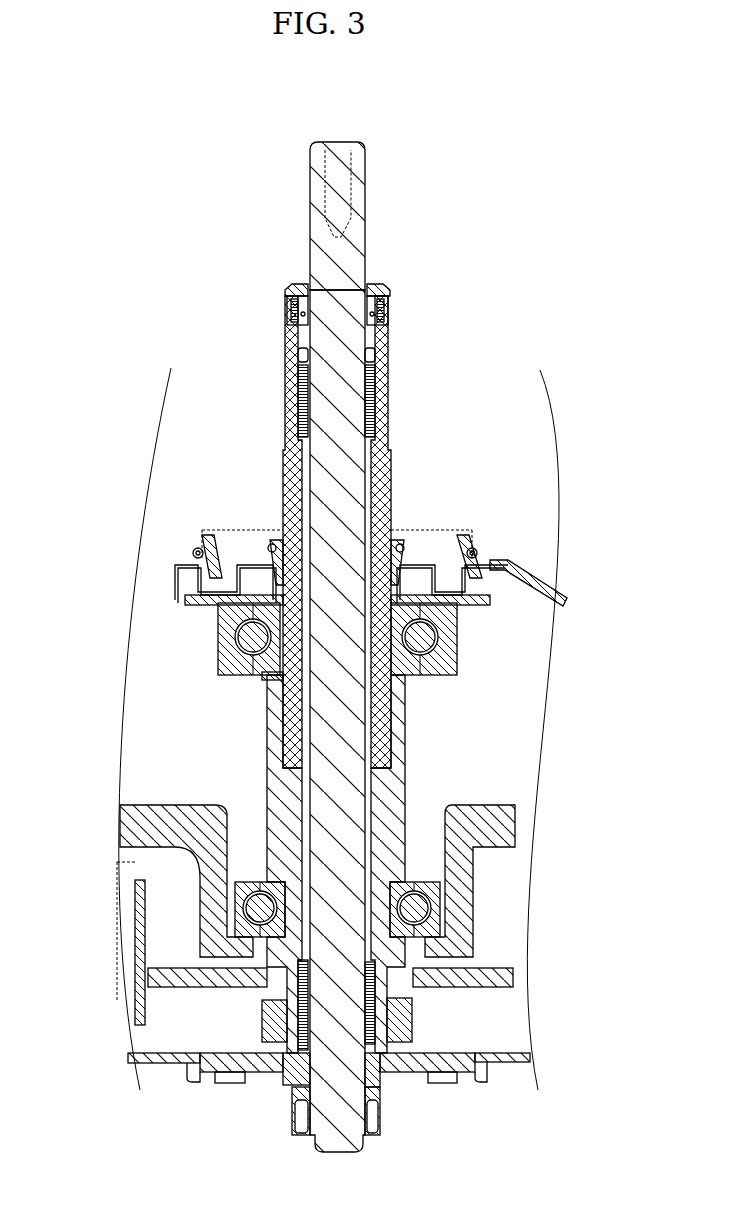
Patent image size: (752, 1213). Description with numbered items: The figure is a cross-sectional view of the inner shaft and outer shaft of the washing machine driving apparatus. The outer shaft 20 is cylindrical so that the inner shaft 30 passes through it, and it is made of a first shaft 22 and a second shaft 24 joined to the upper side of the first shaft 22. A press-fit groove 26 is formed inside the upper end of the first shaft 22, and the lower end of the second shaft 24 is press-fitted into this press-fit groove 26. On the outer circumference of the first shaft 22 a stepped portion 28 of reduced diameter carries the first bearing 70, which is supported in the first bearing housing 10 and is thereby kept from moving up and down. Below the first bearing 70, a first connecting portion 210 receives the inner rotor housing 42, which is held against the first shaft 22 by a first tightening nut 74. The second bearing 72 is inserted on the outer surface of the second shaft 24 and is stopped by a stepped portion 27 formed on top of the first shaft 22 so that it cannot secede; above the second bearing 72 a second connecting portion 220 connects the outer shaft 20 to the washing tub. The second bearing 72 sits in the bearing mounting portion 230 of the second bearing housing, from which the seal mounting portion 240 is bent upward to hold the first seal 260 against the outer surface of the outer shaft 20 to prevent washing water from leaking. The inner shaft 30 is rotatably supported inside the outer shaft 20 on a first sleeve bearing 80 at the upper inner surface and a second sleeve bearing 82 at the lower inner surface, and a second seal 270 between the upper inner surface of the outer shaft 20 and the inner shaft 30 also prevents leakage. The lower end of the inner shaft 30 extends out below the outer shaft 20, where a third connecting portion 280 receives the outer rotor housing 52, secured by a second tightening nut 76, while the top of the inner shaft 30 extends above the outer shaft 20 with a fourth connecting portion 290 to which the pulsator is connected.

The first bearing housing 10 is at (125, 815).
The outer shaft 20 is at (224, 674).
The first shaft 22 is at (275, 716).
The second shaft 24 is at (290, 696).
The press-fit groove 26 is at (395, 732).
The stepped portion 27 is at (275, 663).
The stepped portion 28 is at (252, 893).
The inner shaft 30 is at (320, 508).
The inner rotor housing 42 is at (500, 971).
The outer rotor housing 52 is at (205, 1065).
The first bearing 70 is at (430, 913).
The second bearing 72 is at (232, 636).
The first tightening nut 74 is at (405, 1025).
The second tightening nut 76 is at (378, 1130).
The first sleeve bearing 80 is at (298, 390).
The second sleeve bearing 82 is at (297, 1055).
The first connecting portion 210 is at (280, 992).
The second connecting portion 220 is at (292, 318).
The bearing mounting portion 230 is at (452, 645).
The seal mounting portion 240 is at (495, 593).
The first seal 260 is at (204, 545).
The second seal 270 is at (302, 292).
The third connecting portion 280 is at (370, 1075).
The fourth connecting portion 290 is at (355, 186).